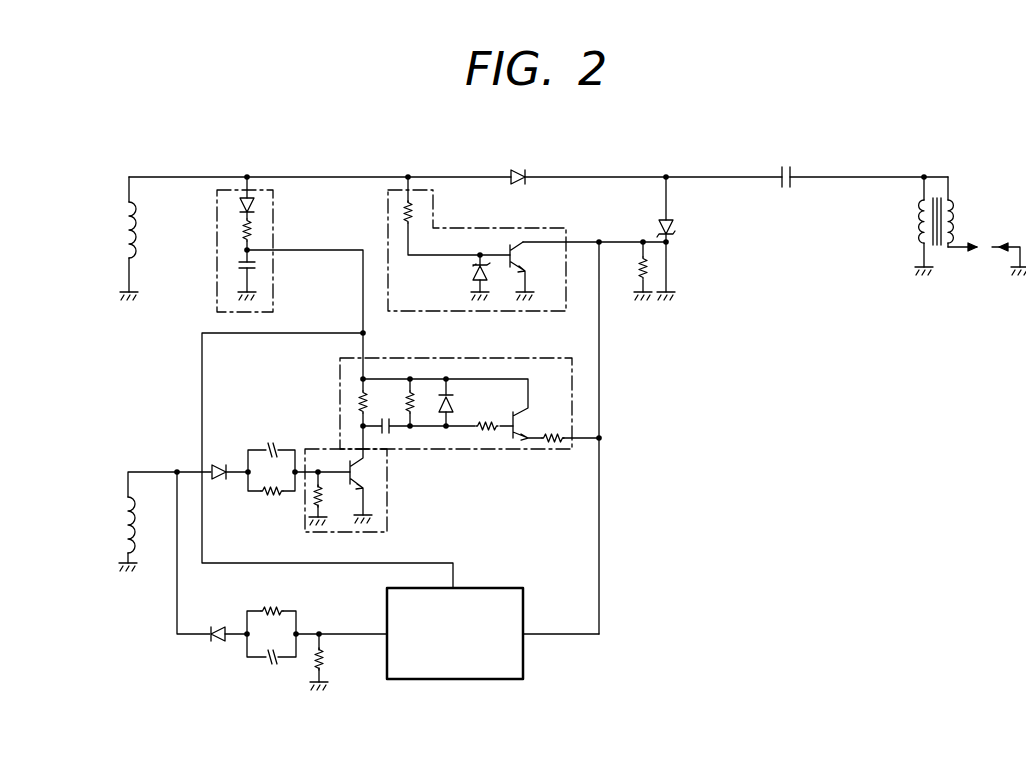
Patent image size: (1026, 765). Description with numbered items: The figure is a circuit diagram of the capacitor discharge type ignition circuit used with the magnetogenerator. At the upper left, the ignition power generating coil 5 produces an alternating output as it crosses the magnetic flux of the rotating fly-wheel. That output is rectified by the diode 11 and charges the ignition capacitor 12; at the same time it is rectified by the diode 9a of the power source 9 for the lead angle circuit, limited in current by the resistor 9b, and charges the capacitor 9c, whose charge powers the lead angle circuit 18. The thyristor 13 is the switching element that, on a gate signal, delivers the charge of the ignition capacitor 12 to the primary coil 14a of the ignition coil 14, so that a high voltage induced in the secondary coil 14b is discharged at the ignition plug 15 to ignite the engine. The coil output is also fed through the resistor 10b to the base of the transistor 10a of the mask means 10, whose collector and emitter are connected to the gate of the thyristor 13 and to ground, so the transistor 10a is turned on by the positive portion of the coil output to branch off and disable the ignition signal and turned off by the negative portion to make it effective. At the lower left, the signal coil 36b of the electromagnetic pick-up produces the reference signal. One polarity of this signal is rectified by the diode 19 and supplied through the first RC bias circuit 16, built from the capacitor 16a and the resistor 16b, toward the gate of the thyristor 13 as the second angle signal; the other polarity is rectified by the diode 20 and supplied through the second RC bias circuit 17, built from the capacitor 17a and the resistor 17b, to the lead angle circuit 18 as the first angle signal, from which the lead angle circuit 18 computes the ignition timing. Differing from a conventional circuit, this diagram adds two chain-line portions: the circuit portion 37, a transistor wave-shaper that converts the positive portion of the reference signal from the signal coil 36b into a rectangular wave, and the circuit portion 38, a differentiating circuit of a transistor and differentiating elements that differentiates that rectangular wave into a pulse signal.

The ignition power generating coil 5 is at (122, 231).
The power source for lead angle circuit 9 is at (243, 244).
The diode 9a is at (238, 205).
The resistor 9b is at (238, 231).
The capacitor 9c is at (255, 264).
The mask means 10 is at (473, 250).
The transistor 10a is at (527, 256).
The resistor 10b is at (407, 212).
The diode 11 is at (518, 168).
The ignition capacitor 12 is at (795, 170).
The thyristor 13 is at (672, 225).
The ignition coil 14 is at (926, 241).
The primary coil 14a is at (920, 218).
The secondary coil 14b is at (950, 216).
The ignition plug 15 is at (984, 250).
The first RC bias circuit 16 is at (277, 462).
The capacitor 16a is at (272, 440).
The resistor 16b is at (272, 497).
The second RC bias circuit 17 is at (253, 640).
The capacitor 17a is at (272, 660).
The resistor 17b is at (275, 610).
The lead angle circuit 18 is at (498, 588).
The diode 19 is at (222, 460).
The diode 20 is at (216, 642).
The signal coil 36b is at (125, 530).
The circuit portion 37 is at (388, 505).
The circuit portion 38 is at (575, 390).